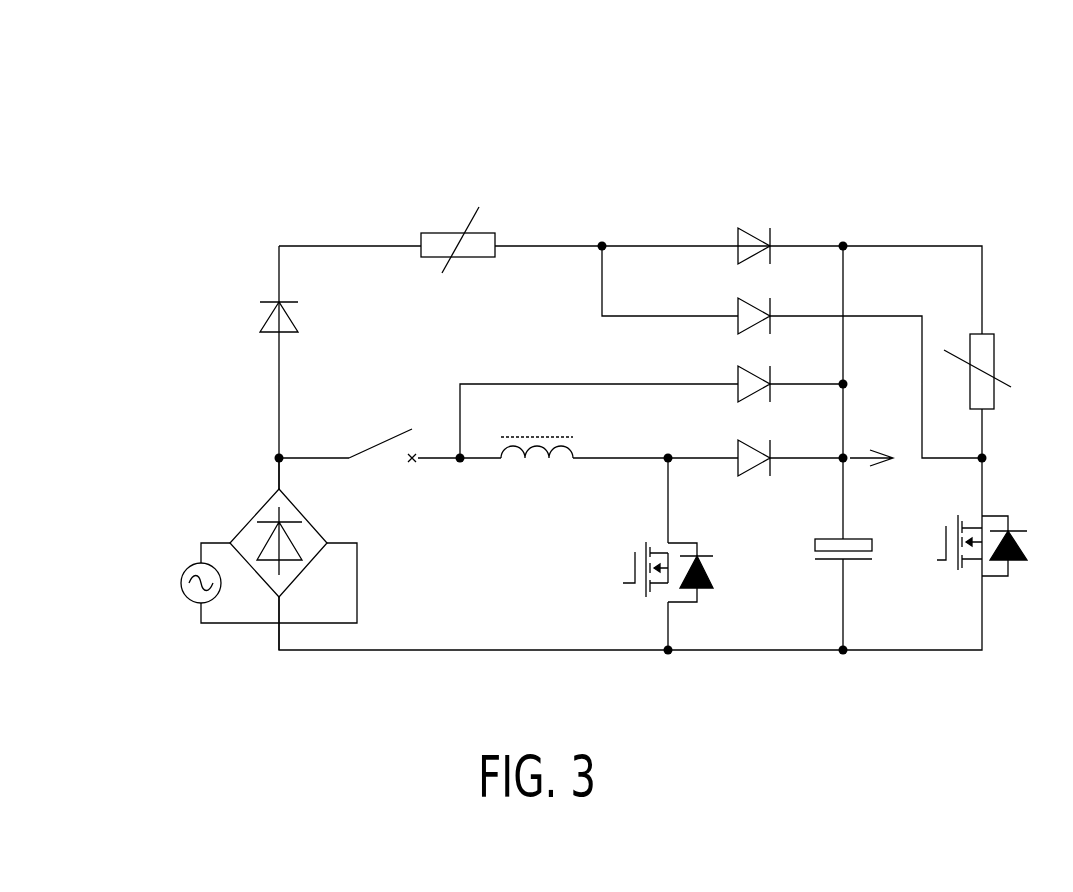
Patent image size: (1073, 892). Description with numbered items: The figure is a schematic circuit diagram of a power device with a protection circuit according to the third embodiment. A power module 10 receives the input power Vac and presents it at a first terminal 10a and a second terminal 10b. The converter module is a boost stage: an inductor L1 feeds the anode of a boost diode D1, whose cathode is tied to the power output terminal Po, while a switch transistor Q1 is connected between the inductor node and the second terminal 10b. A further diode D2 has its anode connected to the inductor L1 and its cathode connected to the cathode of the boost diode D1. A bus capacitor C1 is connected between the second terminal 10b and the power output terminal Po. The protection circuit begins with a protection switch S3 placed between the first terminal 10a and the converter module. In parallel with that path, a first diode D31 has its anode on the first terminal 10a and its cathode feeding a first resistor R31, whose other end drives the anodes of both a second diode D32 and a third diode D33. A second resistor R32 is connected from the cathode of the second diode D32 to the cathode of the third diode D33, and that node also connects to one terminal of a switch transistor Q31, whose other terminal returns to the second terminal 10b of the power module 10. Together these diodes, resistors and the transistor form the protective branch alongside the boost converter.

The power module 10 is at (208, 514).
The first terminal 10a is at (251, 483).
The second terminal 10b is at (253, 632).
The input power Vac is at (242, 583).
The first diode D31 is at (253, 320).
The first resistor R31 is at (481, 236).
The second diode D32 is at (781, 256).
The third diode D33 is at (781, 326).
The diode D2 is at (773, 393).
The boost diode D1 is at (773, 468).
The protection switch S3 is at (382, 460).
The inductor L1 is at (537, 467).
The switch transistor Q1 is at (651, 572).
The bus capacitor C1 is at (838, 567).
The power output terminal Po is at (875, 440).
The second resistor R32 is at (997, 371).
The switch transistor Q31 is at (1005, 545).